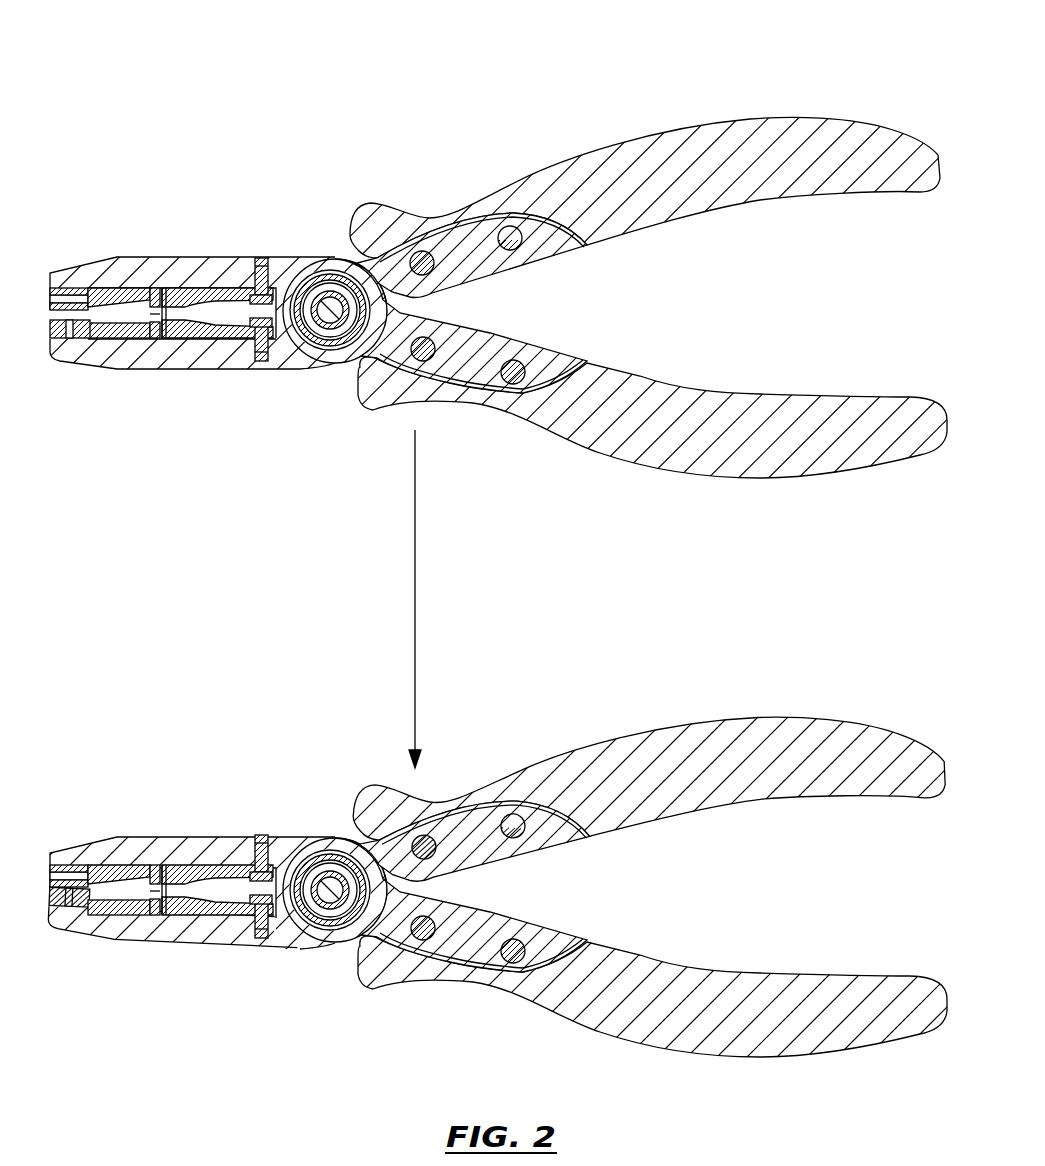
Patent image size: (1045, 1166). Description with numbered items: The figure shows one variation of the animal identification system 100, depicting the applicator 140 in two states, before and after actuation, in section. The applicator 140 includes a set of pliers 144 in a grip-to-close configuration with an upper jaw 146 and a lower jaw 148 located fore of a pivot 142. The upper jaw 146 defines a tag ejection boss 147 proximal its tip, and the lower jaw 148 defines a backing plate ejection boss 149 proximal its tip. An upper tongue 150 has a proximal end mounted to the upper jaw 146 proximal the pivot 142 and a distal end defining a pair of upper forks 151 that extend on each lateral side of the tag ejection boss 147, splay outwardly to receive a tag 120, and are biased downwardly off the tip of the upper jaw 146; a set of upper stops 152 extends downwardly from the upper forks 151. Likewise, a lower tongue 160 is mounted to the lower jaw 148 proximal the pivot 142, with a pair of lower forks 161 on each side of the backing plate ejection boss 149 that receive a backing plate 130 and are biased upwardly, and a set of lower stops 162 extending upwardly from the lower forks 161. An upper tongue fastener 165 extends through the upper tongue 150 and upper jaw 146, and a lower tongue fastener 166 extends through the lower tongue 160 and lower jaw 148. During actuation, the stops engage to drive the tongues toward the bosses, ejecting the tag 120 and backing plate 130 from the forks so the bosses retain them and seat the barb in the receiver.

The animal identification system 100 is at (522, 583).
The tag 120 is at (53, 270).
The backing plate 130 is at (60, 342).
The applicator 140 is at (460, 243).
The pivot 142 is at (333, 315).
The set of pliers 144 is at (447, 370).
The upper jaw 146 is at (222, 272).
The tag ejection boss 147 is at (77, 287).
The lower jaw 148 is at (222, 352).
The backing plate ejection boss 149 is at (95, 339).
The upper tongue 150 is at (105, 221).
The pair of upper forks 151 is at (117, 290).
The set of upper stops 152 is at (175, 296).
The lower tongue 160 is at (343, 362).
The pair of lower forks 161 is at (50, 329).
The set of lower stops 162 is at (164, 338).
The upper tongue fastener 165 is at (264, 262).
The lower tongue fastener 166 is at (263, 360).